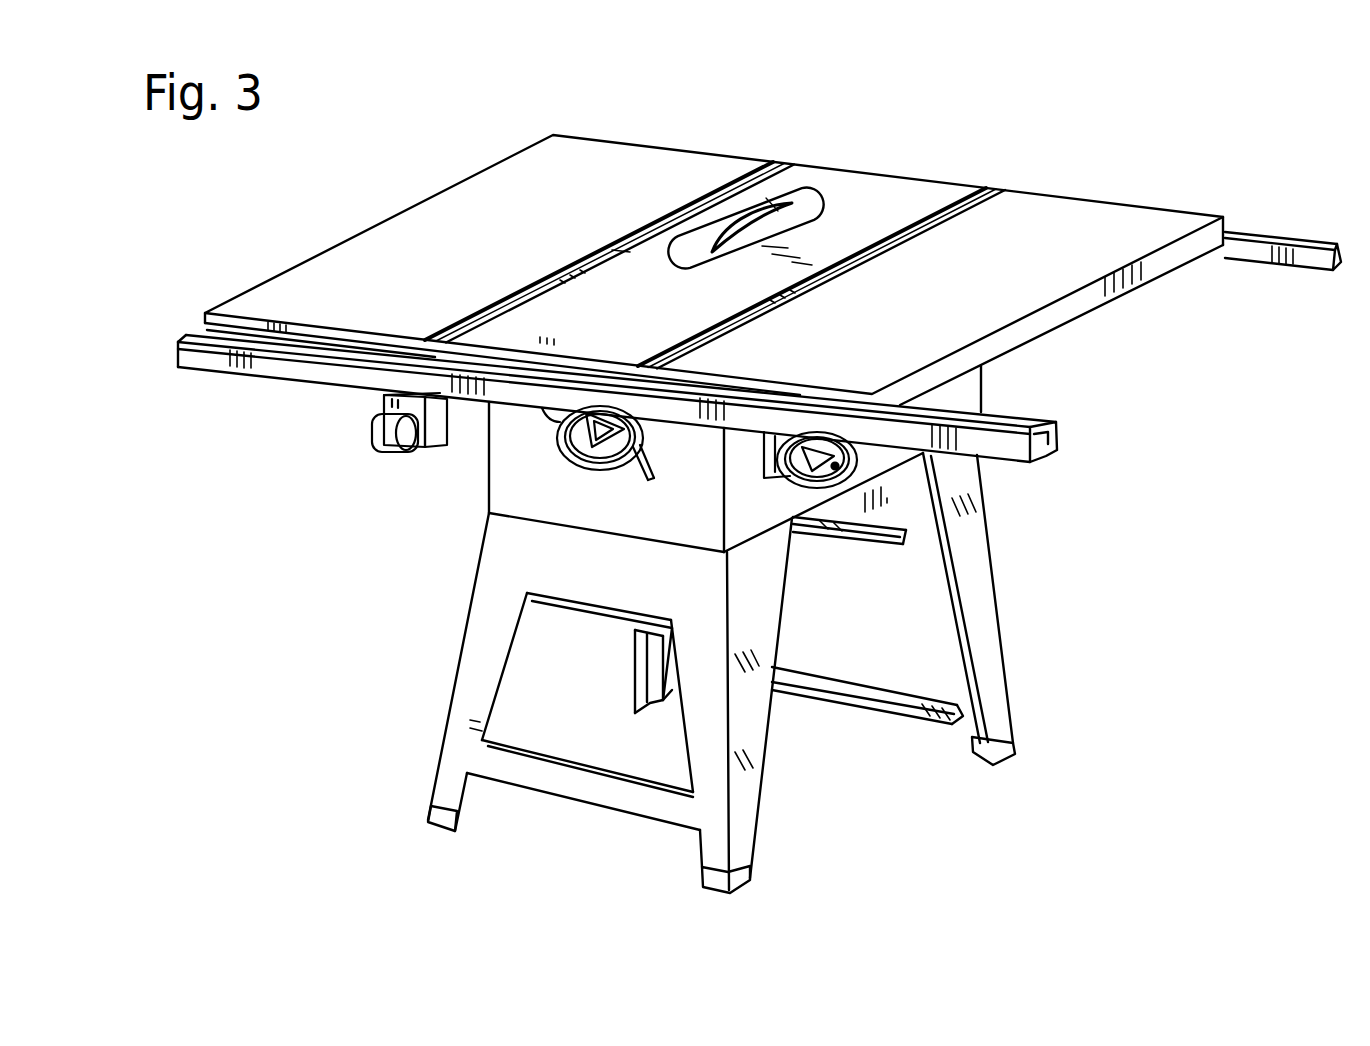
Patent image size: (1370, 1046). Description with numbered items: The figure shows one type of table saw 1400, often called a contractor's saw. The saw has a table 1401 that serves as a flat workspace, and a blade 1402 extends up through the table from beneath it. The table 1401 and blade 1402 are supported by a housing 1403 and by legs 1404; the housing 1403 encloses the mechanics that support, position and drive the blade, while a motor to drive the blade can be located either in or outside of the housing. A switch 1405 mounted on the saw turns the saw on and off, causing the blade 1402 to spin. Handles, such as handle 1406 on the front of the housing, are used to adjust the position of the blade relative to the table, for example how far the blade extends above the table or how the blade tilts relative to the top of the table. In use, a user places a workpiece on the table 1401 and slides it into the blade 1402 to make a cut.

The table saw 1400 is at (230, 239).
The table 1401 is at (914, 197).
The blade 1402 is at (774, 207).
The housing 1403 is at (500, 478).
The legs 1404 is at (456, 690).
The switch 1405 is at (374, 433).
The handle 1406 is at (590, 462).